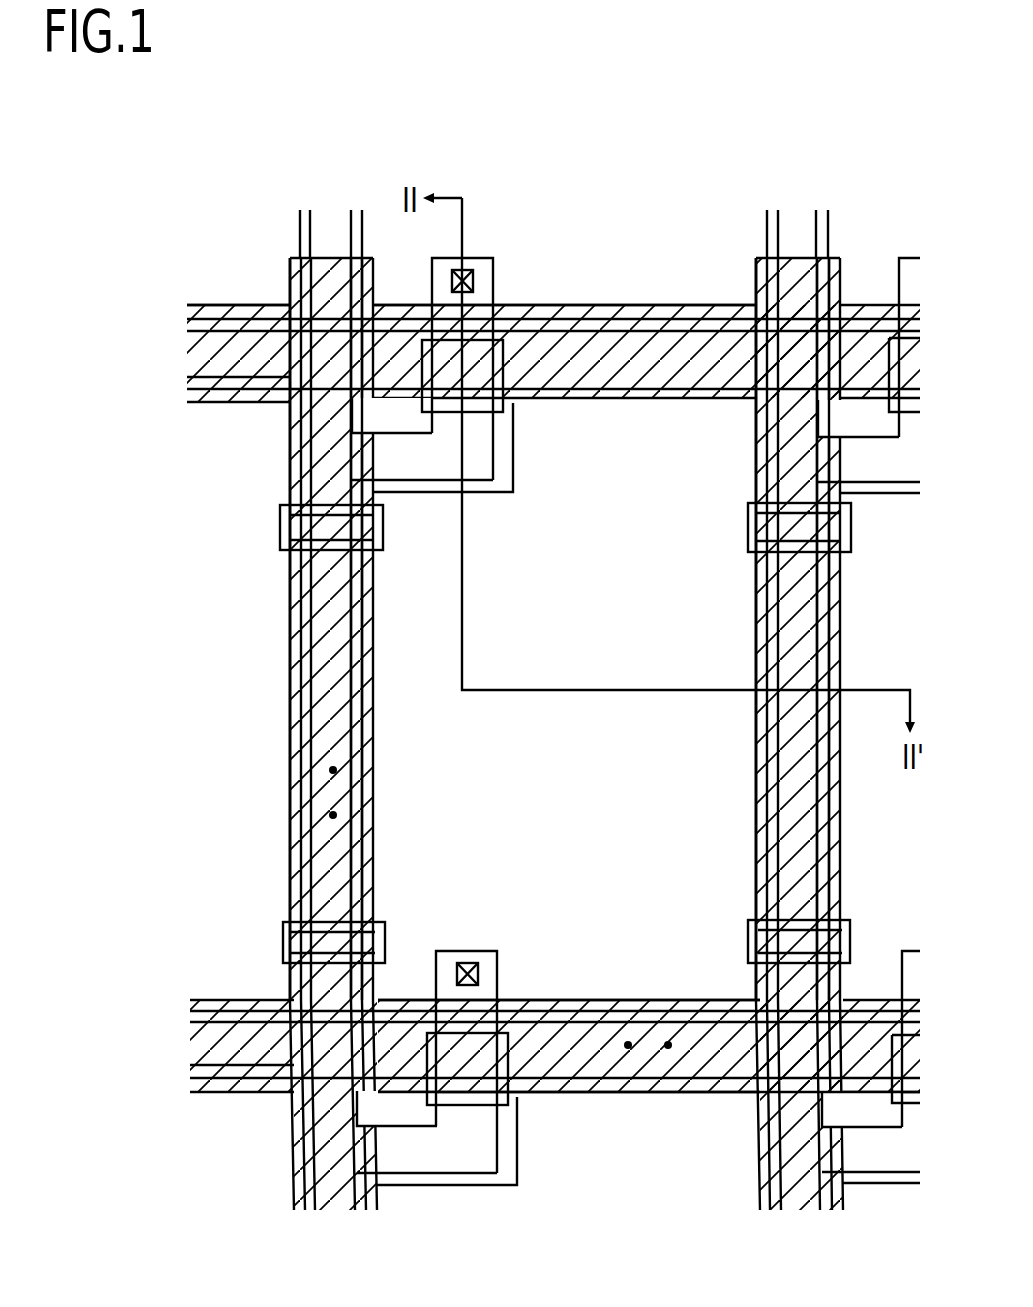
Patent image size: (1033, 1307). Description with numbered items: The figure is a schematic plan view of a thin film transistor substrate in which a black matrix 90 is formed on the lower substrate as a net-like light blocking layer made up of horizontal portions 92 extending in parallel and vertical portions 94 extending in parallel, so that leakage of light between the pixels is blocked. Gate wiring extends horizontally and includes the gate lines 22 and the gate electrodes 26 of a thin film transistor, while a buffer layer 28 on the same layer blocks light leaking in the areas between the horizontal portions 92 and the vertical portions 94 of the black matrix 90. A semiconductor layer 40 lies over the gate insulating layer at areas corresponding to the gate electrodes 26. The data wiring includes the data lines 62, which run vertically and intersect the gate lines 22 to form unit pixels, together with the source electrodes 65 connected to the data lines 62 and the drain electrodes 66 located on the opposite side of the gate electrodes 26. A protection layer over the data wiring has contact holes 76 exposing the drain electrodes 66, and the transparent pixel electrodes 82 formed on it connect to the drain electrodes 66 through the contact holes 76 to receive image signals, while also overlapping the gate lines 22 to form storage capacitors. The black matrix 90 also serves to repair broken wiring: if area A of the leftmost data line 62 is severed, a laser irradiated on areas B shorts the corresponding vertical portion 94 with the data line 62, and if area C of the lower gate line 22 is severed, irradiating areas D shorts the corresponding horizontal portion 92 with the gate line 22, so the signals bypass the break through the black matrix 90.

The gate line 22 is at (660, 400).
The gate electrode 26 is at (496, 366).
The buffer layer 28 is at (280, 527).
The semiconductor layer 40 is at (485, 416).
The data line 62 is at (303, 617).
The source electrode 65 is at (432, 483).
The drain electrode 66 is at (495, 280).
The contact hole 76 is at (477, 270).
The pixel electrode 82 is at (362, 653).
The black matrix 90 is at (677, 890).
The horizontal portion 92 is at (215, 305).
The vertical portion 94 is at (290, 673).
The area A is at (333, 770).
The areas B is at (333, 815).
The area C is at (646, 1086).
The areas D is at (668, 1083).